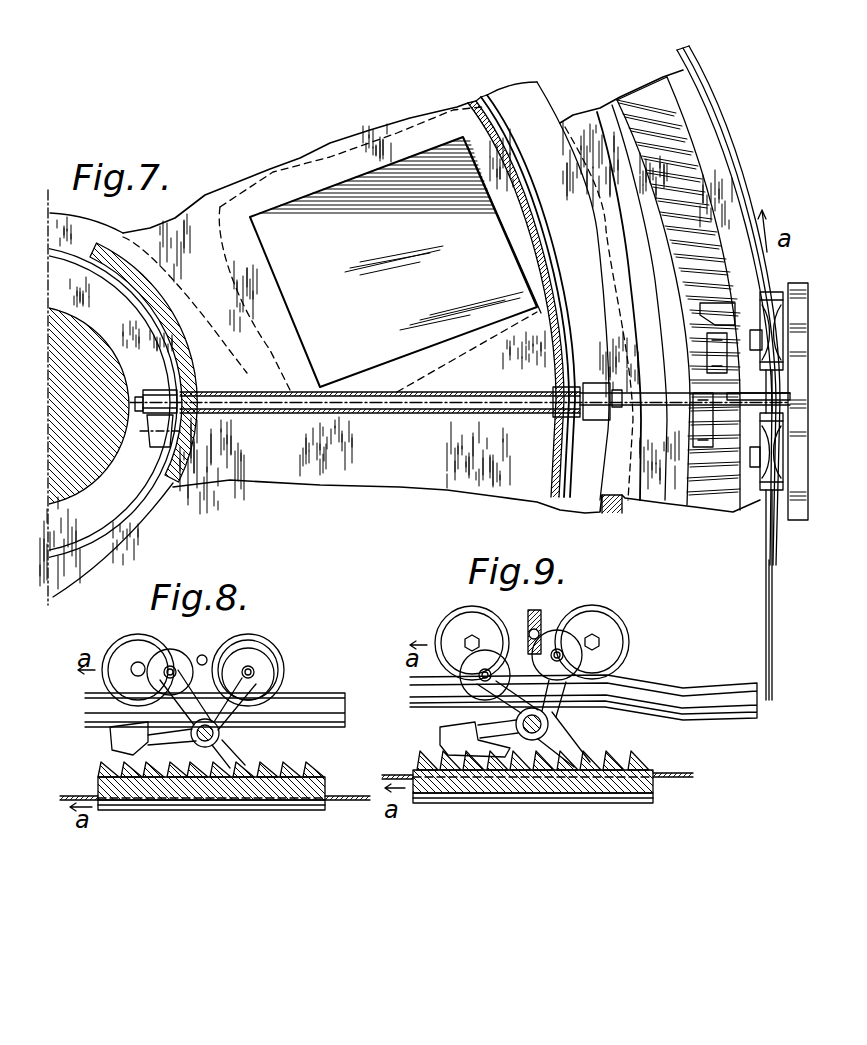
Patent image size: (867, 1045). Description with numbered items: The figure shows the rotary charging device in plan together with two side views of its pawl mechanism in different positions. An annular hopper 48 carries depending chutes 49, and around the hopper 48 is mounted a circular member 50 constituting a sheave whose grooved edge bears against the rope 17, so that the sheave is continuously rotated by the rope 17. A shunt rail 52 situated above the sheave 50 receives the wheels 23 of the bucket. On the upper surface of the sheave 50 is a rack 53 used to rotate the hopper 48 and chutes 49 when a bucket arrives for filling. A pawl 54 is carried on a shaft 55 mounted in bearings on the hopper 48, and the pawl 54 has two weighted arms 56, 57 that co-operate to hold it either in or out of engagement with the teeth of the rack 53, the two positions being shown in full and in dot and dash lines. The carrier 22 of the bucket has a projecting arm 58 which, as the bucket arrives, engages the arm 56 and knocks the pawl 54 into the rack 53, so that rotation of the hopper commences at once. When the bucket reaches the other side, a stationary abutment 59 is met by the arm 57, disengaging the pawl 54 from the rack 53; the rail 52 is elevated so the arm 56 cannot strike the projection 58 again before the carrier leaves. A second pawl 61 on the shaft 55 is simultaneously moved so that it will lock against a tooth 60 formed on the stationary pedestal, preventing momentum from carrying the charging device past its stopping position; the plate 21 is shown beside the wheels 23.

In FIG. 7, the rope 17 is at (773, 645).
In FIG. 8, the rope 17 is at (330, 797).
In FIG. 9, the rope 17 is at (660, 777).
In FIG. 7, the bracket plate 21 is at (800, 432).
In FIG. 8, the carrier 22 is at (253, 727).
In FIG. 9, the carrier 22 is at (560, 732).
In FIG. 7, the wheels 23 is at (783, 318).
In FIG. 8, the wheels 23 is at (133, 637).
In FIG. 9, the wheels 23 is at (467, 610).
In FIG. 7, the annular hopper 48 is at (260, 463).
In FIG. 7, the chutes 49 is at (395, 264).
In FIG. 7, the circular member 50 is at (727, 193).
In FIG. 7, the shunt rail 52 is at (773, 535).
In FIG. 8, the shunt rail 52 is at (295, 693).
In FIG. 9, the shunt rail 52 is at (690, 685).
In FIG. 7, the rack 53 is at (707, 183).
In FIG. 8, the rack 53 is at (322, 768).
In FIG. 9, the rack 53 is at (643, 752).
In FIG. 7, the pawl 54 is at (727, 307).
In FIG. 8, the pawl 54 is at (112, 743).
In FIG. 9, the pawl 54 is at (443, 735).
In FIG. 7, the shaft 55 is at (408, 408).
In FIG. 7, the weighted arm 56 is at (730, 373).
In FIG. 8, the weighted arm 56 is at (150, 678).
In FIG. 9, the weighted arm 56 is at (460, 677).
In FIG. 7, the weighted arm 57 is at (727, 410).
In FIG. 8, the weighted arm 57 is at (255, 676).
In FIG. 9, the weighted arm 57 is at (560, 678).
In FIG. 7, the projecting arm 58 is at (780, 397).
In FIG. 8, the projecting arm 58 is at (202, 655).
In FIG. 9, the stationary abutment 59 is at (542, 613).
In FIG. 7, the tooth 60 is at (180, 392).
In FIG. 7, the second pawl 61 is at (165, 430).